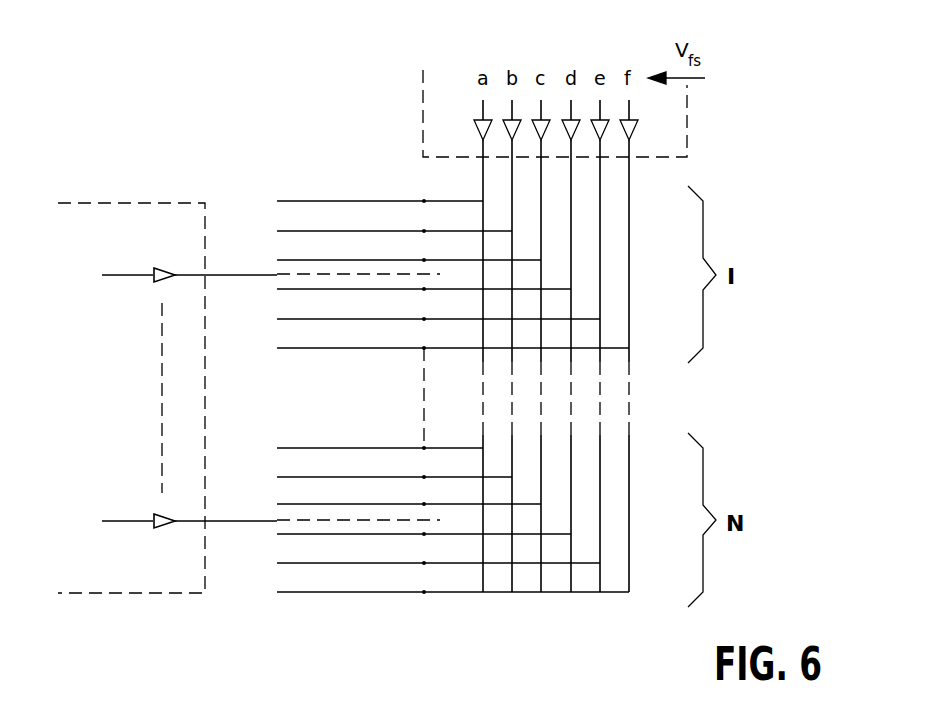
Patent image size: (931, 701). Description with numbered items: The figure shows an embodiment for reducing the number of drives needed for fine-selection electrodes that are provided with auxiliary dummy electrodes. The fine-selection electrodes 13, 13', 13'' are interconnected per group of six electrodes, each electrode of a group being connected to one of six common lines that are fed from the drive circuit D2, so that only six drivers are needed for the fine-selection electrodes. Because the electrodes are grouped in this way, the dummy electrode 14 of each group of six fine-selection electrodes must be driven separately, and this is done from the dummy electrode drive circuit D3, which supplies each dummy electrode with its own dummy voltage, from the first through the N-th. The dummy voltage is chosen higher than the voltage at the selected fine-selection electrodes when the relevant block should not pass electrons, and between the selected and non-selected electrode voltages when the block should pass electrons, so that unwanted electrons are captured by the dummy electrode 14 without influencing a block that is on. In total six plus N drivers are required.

The fine-selection electrode 13 is at (380, 166).
The fine-selection electrode 13' is at (394, 199).
The fine-selection electrode 13'' is at (409, 196).
The dummy electrode 14 is at (380, 274).
The drive circuit D2 is at (422, 86).
The dummy electrode drive circuit D3 is at (134, 203).